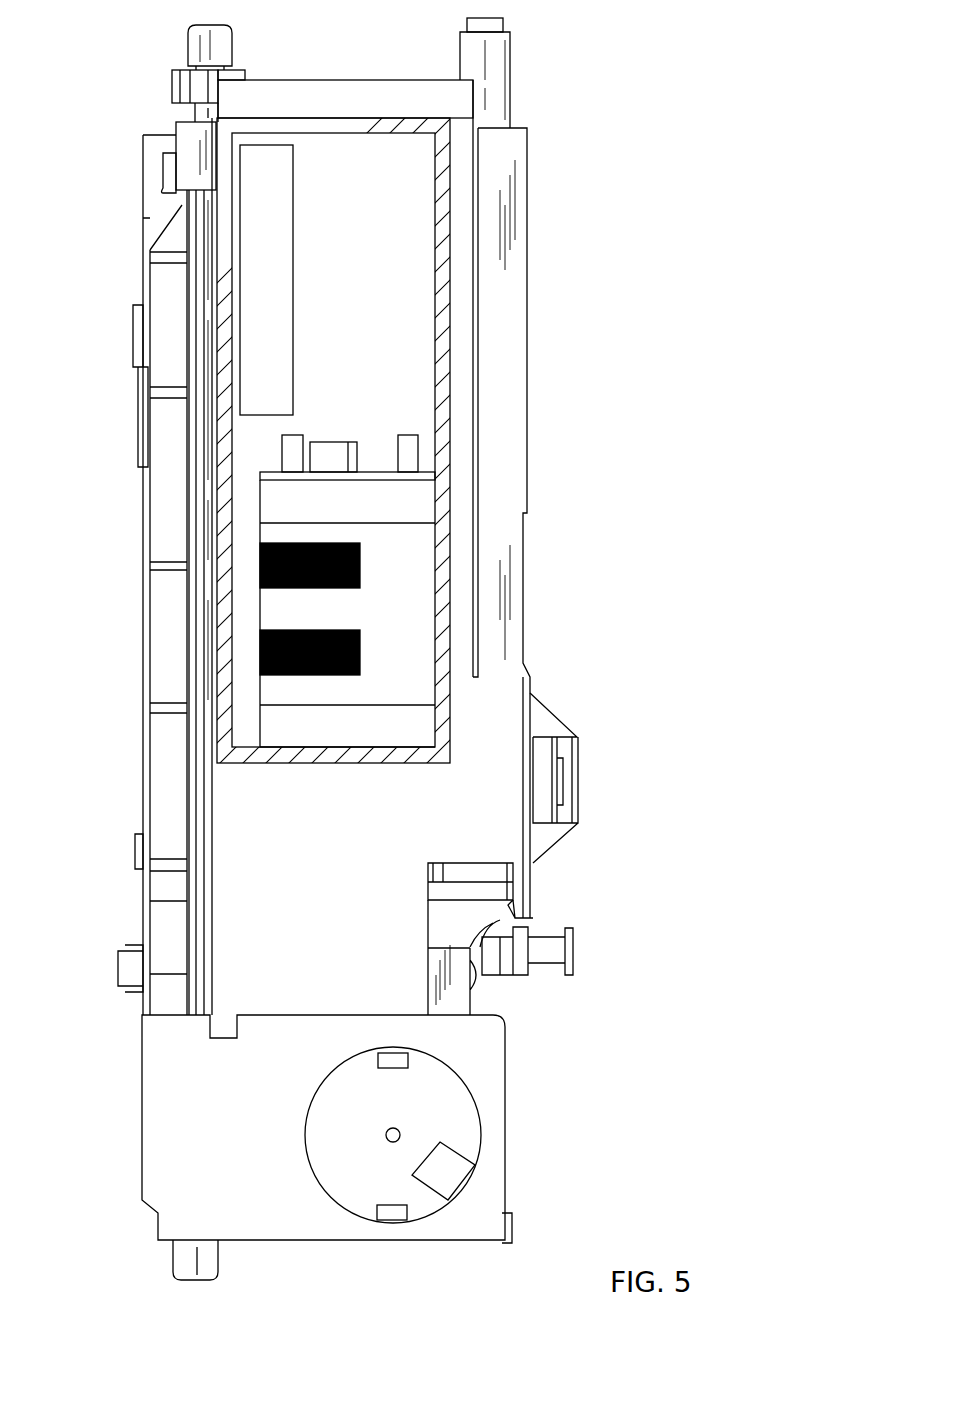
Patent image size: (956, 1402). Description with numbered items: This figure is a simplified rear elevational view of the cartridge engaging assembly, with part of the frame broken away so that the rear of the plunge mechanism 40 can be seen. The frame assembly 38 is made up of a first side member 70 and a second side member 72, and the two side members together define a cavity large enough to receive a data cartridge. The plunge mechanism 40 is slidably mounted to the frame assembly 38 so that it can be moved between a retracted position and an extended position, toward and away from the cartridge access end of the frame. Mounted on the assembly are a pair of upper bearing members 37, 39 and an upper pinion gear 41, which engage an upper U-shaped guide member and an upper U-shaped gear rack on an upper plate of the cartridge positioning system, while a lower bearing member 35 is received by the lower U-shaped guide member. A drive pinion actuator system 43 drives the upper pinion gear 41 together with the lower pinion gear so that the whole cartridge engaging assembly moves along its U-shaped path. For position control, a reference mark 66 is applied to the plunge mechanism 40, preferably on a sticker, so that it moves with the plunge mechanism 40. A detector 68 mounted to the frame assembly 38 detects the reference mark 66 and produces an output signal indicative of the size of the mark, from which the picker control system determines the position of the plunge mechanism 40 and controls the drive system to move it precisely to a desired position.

The lower bearing member 35 is at (173, 1262).
The upper bearing member 37 is at (512, 45).
The frame assembly 38 is at (527, 331).
The upper bearing member 39 is at (188, 42).
The upper pinion gear 41 is at (172, 87).
The plunge mechanism 40 is at (373, 468).
The drive pinion actuator system 43 is at (305, 1133).
The reference mark 66 is at (337, 612).
The detector 68 is at (278, 294).
The first side member 70 is at (525, 468).
The second side member 72 is at (150, 562).